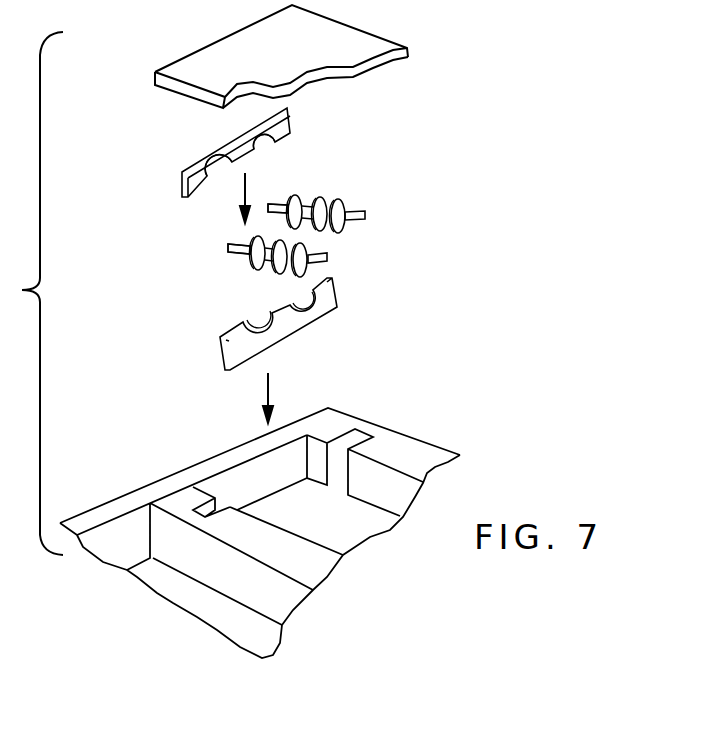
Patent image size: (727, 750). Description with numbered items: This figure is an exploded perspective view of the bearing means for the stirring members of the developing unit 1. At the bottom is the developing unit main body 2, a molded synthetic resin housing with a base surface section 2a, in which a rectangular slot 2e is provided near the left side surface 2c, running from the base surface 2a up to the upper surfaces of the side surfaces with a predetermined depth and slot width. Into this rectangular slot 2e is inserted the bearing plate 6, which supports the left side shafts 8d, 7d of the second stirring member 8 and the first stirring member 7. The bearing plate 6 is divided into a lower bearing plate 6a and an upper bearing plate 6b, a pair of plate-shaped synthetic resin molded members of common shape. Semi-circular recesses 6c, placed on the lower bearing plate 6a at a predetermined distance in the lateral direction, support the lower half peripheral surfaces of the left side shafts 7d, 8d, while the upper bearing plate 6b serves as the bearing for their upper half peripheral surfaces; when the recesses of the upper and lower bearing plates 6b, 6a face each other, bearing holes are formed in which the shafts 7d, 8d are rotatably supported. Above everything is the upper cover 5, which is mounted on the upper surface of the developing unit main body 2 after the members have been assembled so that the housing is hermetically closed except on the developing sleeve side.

The developing unit 1 is at (436, 66).
The developing unit main body 2 is at (420, 460).
The base surface section 2a is at (353, 527).
The left side surface 2c is at (160, 480).
The rectangular slot 2e is at (355, 438).
The upper cover 5 is at (347, 40).
The bearing plate 6 is at (113, 263).
The lower bearing plate 6a is at (222, 353).
The upper bearing plate 6b is at (192, 192).
The semi-circular recesses 6c is at (256, 165).
The first stirring member 7 is at (325, 240).
The left side shaft of the first stirring member 7d is at (241, 256).
The second stirring member 8 is at (336, 199).
The left side shaft of the second stirring member 8d is at (288, 196).